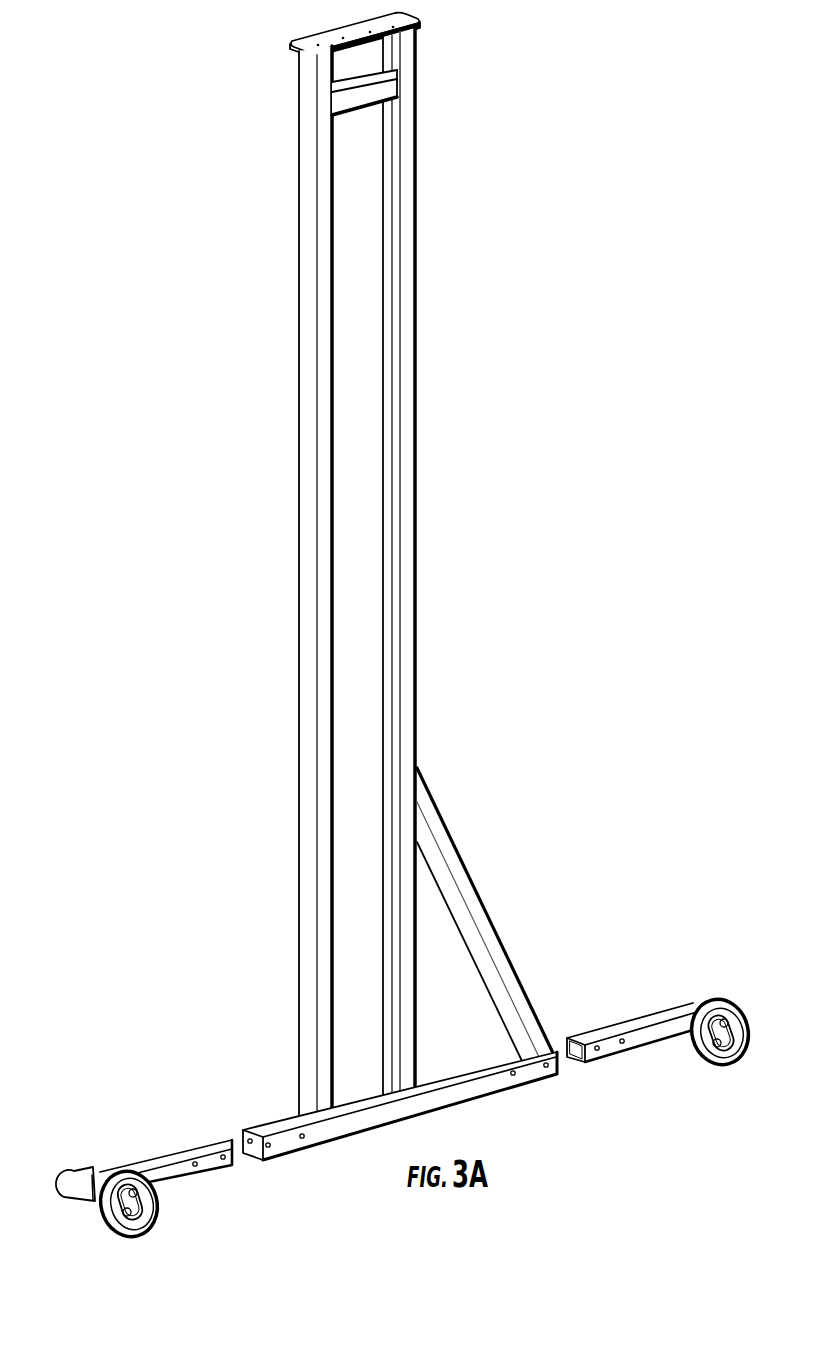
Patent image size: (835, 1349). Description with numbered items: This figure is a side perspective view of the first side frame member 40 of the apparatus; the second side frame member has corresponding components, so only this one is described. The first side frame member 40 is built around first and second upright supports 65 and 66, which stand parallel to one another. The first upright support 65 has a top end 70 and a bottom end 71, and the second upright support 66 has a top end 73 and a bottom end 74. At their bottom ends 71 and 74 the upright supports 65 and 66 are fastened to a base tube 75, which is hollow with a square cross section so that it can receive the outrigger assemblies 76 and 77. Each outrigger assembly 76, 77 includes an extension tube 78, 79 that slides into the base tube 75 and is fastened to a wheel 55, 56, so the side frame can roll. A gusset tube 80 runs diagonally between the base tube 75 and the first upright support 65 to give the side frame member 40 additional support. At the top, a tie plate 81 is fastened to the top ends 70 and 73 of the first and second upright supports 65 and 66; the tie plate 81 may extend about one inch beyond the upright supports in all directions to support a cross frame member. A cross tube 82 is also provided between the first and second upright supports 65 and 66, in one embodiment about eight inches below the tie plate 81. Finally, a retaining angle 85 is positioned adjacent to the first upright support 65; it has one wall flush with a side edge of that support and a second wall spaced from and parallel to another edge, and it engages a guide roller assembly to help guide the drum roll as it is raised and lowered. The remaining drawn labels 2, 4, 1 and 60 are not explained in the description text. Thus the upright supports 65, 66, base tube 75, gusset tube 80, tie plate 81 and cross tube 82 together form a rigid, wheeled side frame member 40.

The first side frame member 40 is at (540, 264).
The upright posts 2 is at (305, 490).
The first upright support 65 is at (418, 256).
The second upright support 66 is at (308, 333).
The top end 70 is at (418, 40).
The top end 73 is at (298, 63).
The tie plate 81 is at (347, 33).
The cross tube 82 is at (363, 95).
The retaining angle 85 is at (385, 310).
The diagonal brace 4 is at (477, 908).
The gusset tube 80 is at (510, 970).
The base beam 1 is at (292, 1137).
The bottom end 74 is at (310, 1100).
The bottom end 71 is at (417, 1068).
The base tube 75 is at (363, 1122).
The outrigger assembly 77 is at (191, 1185).
The extension tube 79 is at (193, 1147).
The wheel 55 is at (105, 1218).
The end cap 60 is at (60, 1180).
The outrigger assembly 76 is at (650, 1058).
The extension tube 78 is at (640, 1020).
The wheel 56 is at (700, 1050).